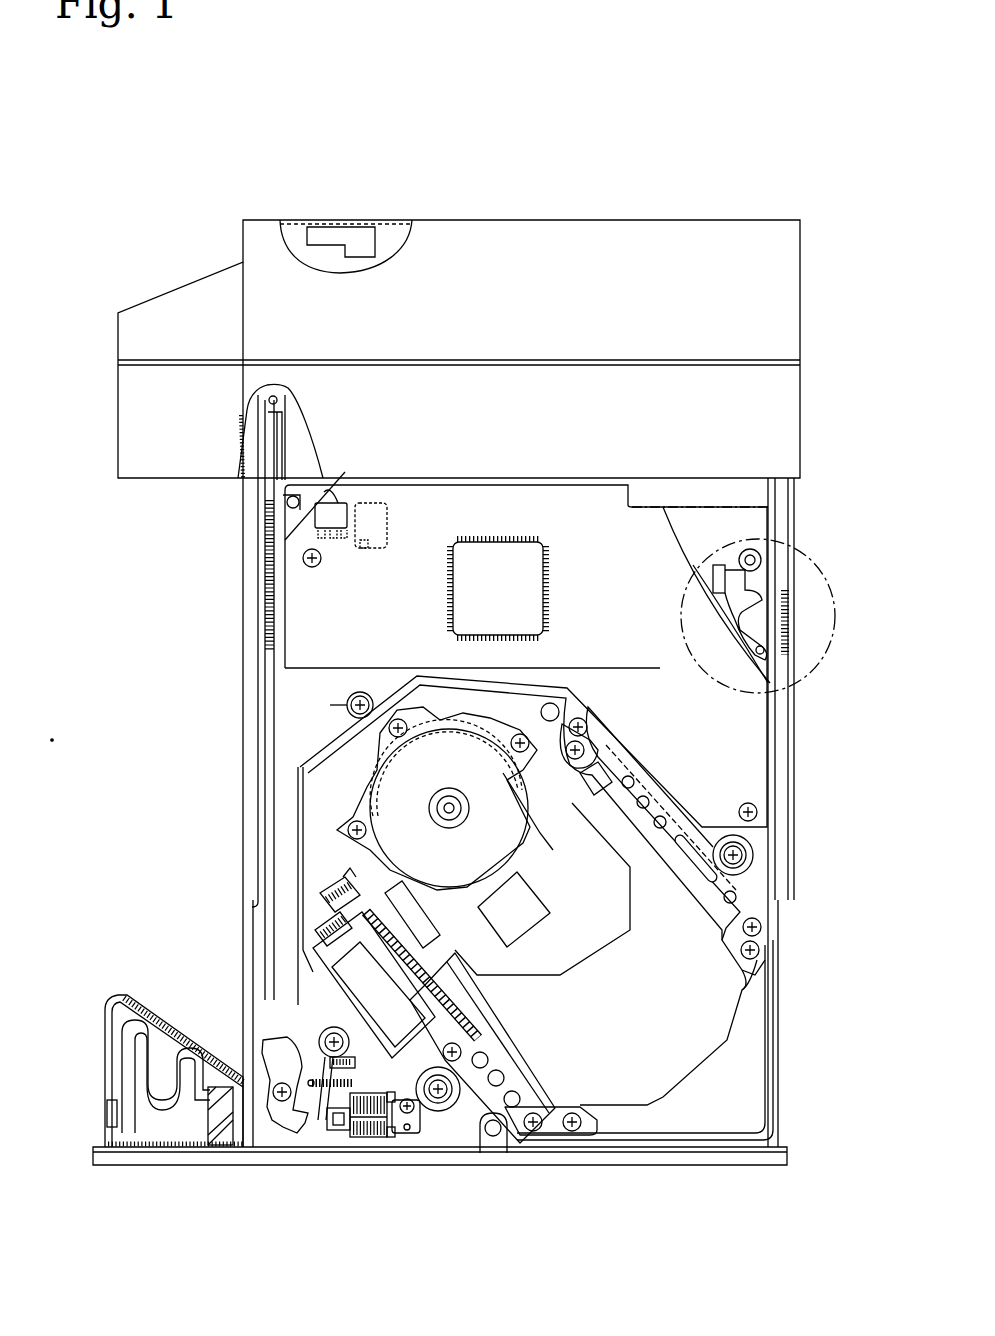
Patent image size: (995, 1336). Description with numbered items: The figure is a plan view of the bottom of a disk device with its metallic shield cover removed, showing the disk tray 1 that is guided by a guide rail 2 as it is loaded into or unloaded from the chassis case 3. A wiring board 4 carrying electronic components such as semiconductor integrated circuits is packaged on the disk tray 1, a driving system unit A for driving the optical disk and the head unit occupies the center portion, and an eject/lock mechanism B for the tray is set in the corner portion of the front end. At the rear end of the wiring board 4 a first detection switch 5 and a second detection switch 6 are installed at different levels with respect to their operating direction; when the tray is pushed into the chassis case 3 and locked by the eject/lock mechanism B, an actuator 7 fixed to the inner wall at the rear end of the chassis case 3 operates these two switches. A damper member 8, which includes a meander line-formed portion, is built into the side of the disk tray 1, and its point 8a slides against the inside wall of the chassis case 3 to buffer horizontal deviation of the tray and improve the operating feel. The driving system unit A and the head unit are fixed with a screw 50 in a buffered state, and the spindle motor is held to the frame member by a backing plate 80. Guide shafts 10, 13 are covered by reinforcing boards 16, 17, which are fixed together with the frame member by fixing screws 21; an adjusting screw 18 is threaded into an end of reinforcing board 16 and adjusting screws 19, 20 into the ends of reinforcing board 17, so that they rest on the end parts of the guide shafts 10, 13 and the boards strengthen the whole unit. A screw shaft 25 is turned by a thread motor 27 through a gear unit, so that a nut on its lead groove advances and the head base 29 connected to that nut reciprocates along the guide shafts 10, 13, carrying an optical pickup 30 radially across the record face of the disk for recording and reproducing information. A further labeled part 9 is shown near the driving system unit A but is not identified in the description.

The disk tray 1 is at (780, 1000).
The guide rail 2 is at (245, 712).
The chassis case 3 is at (780, 422).
The wiring board 4 is at (747, 703).
The first detection switch 5 is at (322, 510).
The second detection switch 6 is at (375, 522).
The actuator 7 is at (362, 247).
The damper member 8 is at (140, 1030).
The point of the damper member 8a is at (105, 1112).
The spindle motor unit 9 is at (330, 843).
The guide shaft 10 is at (478, 1070).
The guide shaft 13 is at (687, 873).
The reinforcing board 16 is at (527, 1103).
The reinforcement board 17 is at (608, 755).
The adjusting screw 18 is at (582, 1127).
The adjusting screw 19 is at (577, 748).
The adjusting screw 20 is at (757, 950).
The fixing screws 21 is at (578, 722).
The screw shaft 25 is at (450, 1003).
The thread motor 27 is at (367, 987).
The head base 29 is at (573, 955).
The optical pickup 30 is at (520, 897).
The screw 50 is at (743, 855).
The backing plate 80 is at (388, 748).
The driving system unit A is at (287, 888).
The eject/lock mechanism B is at (283, 1120).